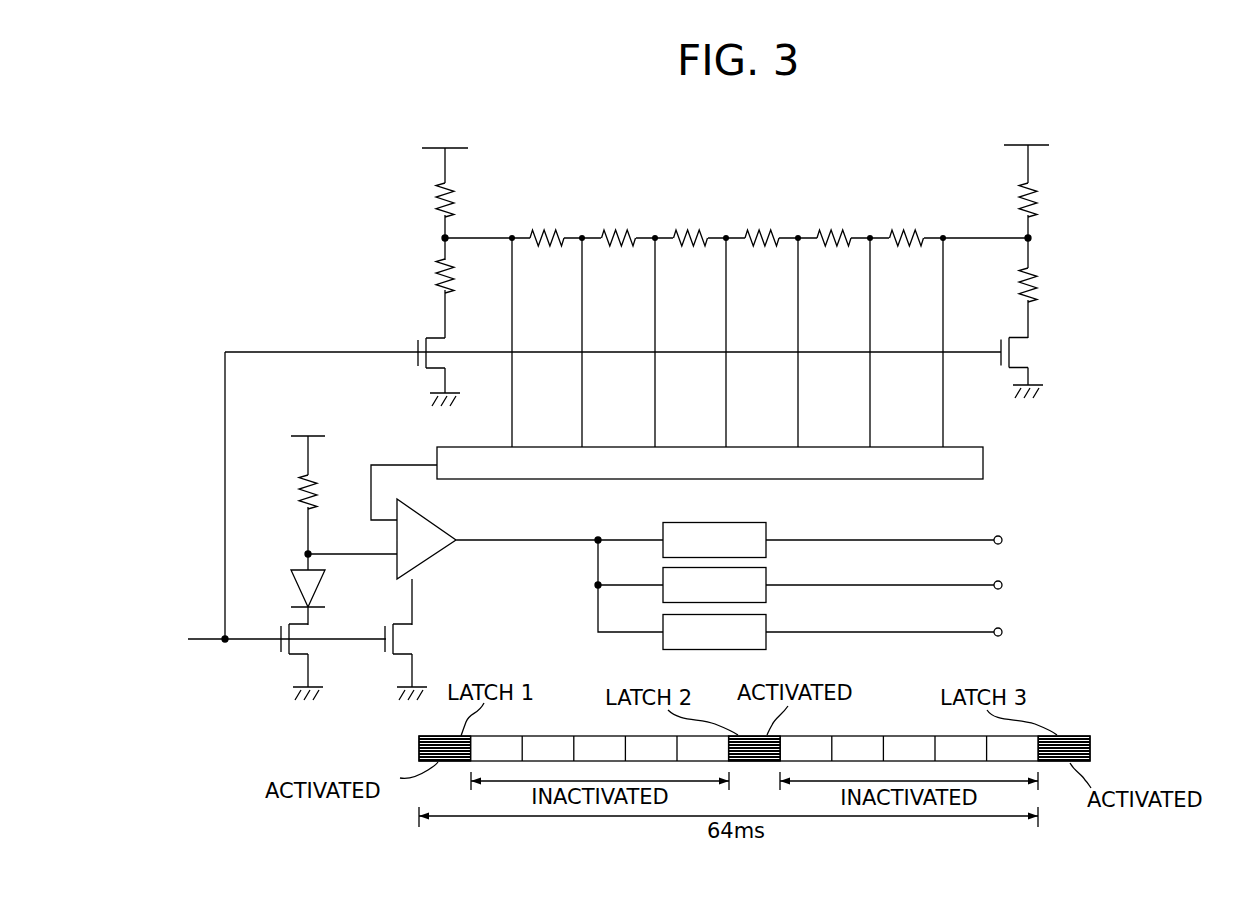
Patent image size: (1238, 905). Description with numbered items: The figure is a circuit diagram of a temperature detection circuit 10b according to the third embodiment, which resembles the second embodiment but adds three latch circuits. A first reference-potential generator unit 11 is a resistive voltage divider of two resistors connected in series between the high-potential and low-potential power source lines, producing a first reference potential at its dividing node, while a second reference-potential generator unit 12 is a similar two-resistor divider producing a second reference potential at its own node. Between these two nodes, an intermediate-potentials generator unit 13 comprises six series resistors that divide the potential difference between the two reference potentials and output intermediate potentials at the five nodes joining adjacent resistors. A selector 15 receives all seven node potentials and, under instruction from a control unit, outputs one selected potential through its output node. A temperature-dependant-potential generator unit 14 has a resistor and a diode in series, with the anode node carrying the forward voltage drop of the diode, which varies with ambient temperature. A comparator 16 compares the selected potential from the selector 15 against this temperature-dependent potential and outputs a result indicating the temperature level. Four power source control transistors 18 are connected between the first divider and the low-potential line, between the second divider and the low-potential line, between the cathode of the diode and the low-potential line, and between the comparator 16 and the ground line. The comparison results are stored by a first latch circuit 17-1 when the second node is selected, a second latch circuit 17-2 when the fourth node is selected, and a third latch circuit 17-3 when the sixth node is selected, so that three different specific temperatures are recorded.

The temperature detection circuit 10b is at (911, 133).
The first reference-potential generator unit 11 is at (477, 175).
The second reference-potential generator unit 12 is at (999, 179).
The intermediate-potentials generator unit 13 is at (711, 183).
The temperature-dependant-potential generator unit 14 is at (283, 452).
The selector 15 is at (983, 462).
The comparator 16 is at (440, 527).
The first latch circuit 17-1 is at (766, 530).
The second latch circuit 17-2 is at (766, 575).
The third latch circuit 17-3 is at (766, 622).
The power source control transistors 18 is at (420, 358).